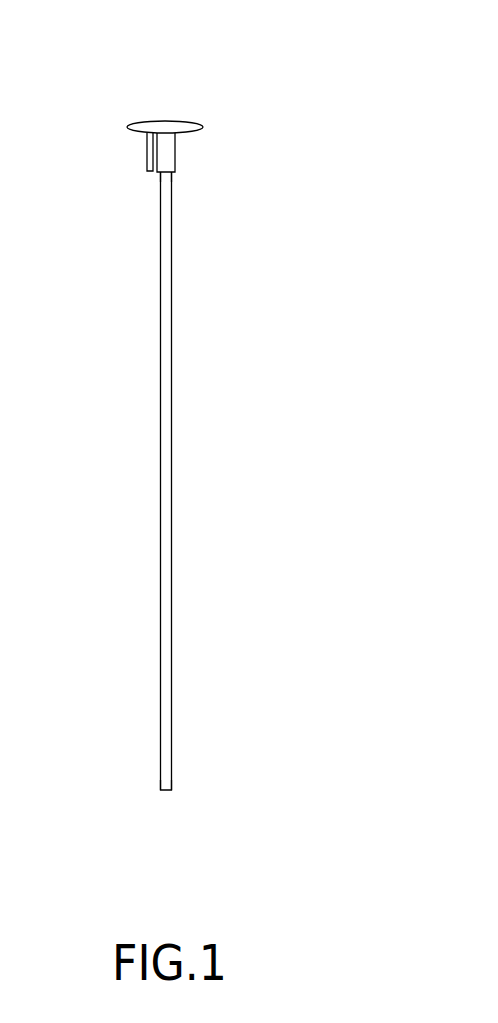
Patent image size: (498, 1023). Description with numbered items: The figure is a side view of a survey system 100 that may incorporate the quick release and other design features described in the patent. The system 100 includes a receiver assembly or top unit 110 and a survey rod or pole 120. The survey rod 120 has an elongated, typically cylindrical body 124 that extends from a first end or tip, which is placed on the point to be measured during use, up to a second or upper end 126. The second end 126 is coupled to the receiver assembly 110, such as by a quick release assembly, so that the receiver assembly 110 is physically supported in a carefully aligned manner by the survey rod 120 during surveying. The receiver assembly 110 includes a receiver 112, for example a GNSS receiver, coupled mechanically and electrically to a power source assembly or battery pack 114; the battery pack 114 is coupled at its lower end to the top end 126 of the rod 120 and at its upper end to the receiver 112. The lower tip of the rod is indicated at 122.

The survey system 100 is at (279, 69).
The receiver assembly 110 is at (231, 113).
The receiver 112 is at (115, 107).
The battery pack 114 is at (196, 172).
The second end 126 is at (160, 173).
The survey rod 120 is at (195, 350).
The cylindrical body 124 is at (168, 443).
The tip end 122 is at (172, 790).